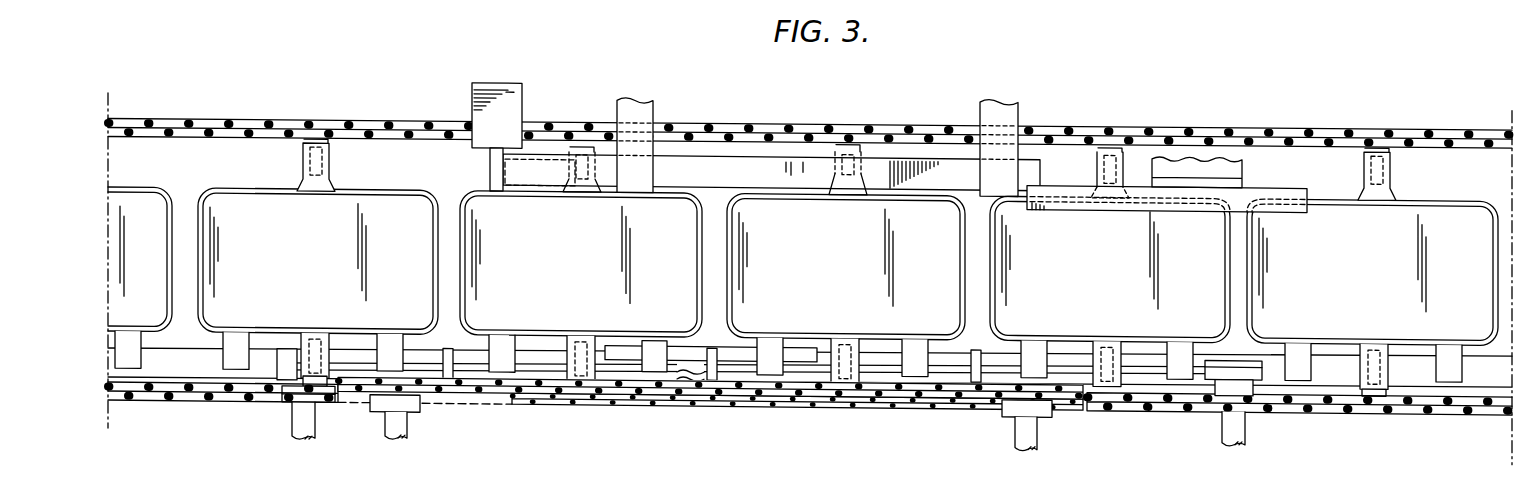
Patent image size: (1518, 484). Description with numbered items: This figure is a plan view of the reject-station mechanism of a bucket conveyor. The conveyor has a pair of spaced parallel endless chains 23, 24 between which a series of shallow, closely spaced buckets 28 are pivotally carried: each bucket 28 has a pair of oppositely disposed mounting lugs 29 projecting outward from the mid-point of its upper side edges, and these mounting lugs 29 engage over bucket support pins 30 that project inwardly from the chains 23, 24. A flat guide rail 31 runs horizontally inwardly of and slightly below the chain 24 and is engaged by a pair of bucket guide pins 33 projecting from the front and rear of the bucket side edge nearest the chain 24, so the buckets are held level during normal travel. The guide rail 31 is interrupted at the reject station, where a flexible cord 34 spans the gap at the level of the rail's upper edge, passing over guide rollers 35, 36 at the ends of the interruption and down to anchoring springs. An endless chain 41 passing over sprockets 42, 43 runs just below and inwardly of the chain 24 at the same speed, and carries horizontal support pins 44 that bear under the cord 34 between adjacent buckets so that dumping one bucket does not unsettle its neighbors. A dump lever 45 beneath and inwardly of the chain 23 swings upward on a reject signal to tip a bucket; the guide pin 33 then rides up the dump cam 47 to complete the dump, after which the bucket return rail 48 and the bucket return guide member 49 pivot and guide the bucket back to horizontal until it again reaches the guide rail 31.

The endless chain 23 is at (214, 121).
The endless chain 24 is at (240, 403).
The bucket 28 is at (124, 265).
The mounting lug 29 is at (333, 165).
The bucket support pin 30 is at (303, 162).
The guide rail 31 is at (156, 380).
The bucket guide pin 33 is at (392, 338).
The flexible cord 34 is at (938, 366).
The guide roller 35 is at (298, 353).
The guide roller 36 is at (1228, 352).
The endless chain 41 is at (490, 392).
The sprocket 42 is at (417, 412).
The sprocket 43 is at (1052, 409).
The support pin 44 is at (448, 347).
The dump lever 45 is at (490, 170).
The dump cam 47 is at (632, 357).
The bucket return rail 48 is at (719, 176).
The bucket return guide member 49 is at (1285, 178).